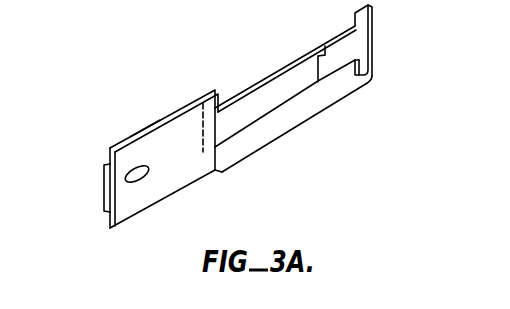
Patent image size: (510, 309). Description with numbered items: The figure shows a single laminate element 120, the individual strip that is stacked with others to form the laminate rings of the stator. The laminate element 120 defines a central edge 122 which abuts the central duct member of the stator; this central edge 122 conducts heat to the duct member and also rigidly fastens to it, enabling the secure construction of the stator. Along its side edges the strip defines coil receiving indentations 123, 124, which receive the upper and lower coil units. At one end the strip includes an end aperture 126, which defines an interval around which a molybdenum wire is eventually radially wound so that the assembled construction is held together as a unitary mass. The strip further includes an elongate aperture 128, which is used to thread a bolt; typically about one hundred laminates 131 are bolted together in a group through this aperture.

The laminate element 120 is at (184, 146).
The central edge 122 is at (373, 31).
The coil receiving indentation 123 is at (215, 85).
The coil receiving indentation 124 is at (274, 144).
The end aperture 126 is at (101, 185).
The elongate aperture 128 is at (140, 181).
The laminates 131 is at (141, 130).